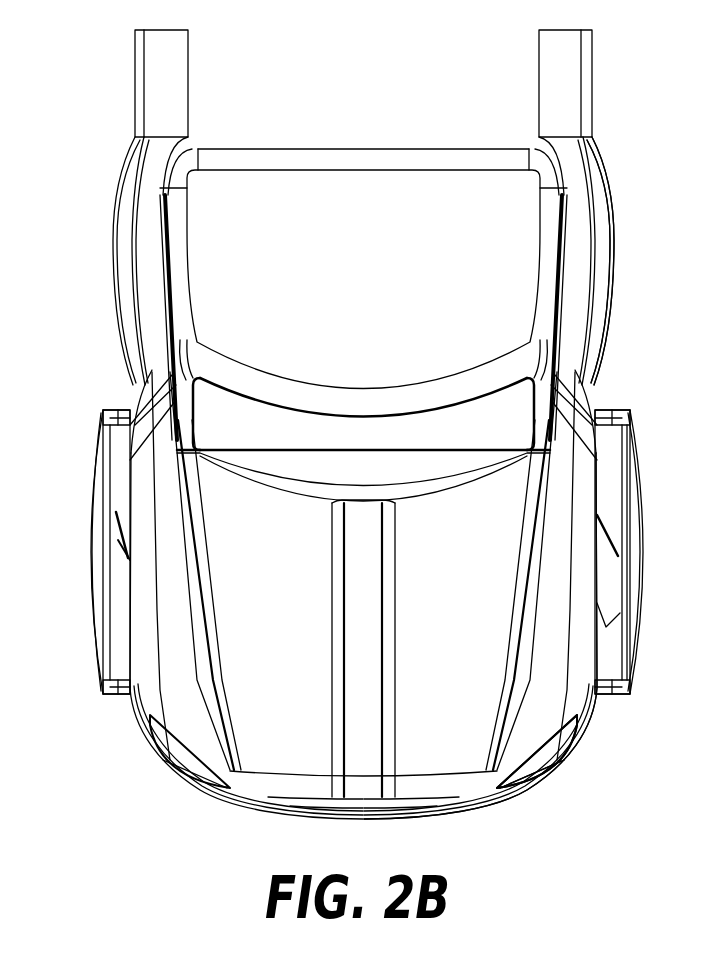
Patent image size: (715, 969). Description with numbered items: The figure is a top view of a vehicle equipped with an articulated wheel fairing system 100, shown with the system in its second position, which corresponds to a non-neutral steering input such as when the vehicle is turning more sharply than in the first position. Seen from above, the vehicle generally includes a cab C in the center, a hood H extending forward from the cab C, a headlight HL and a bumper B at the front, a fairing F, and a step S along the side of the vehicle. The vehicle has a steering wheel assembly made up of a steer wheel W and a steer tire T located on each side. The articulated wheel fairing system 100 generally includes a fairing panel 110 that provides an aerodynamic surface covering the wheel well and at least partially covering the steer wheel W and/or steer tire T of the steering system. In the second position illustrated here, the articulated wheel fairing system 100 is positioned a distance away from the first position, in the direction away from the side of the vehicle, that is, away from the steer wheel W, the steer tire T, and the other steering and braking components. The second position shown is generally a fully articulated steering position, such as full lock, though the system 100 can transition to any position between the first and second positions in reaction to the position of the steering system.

The fairing F is at (568, 78).
The cab C is at (512, 232).
The step S is at (602, 282).
The articulated wheel fairing system 100 is at (84, 478).
The steer tire T is at (118, 504).
The steer wheel W is at (120, 548).
The fairing panel 110 is at (95, 573).
The bumper B is at (573, 750).
The headlight HL is at (536, 763).
The hood H is at (448, 785).